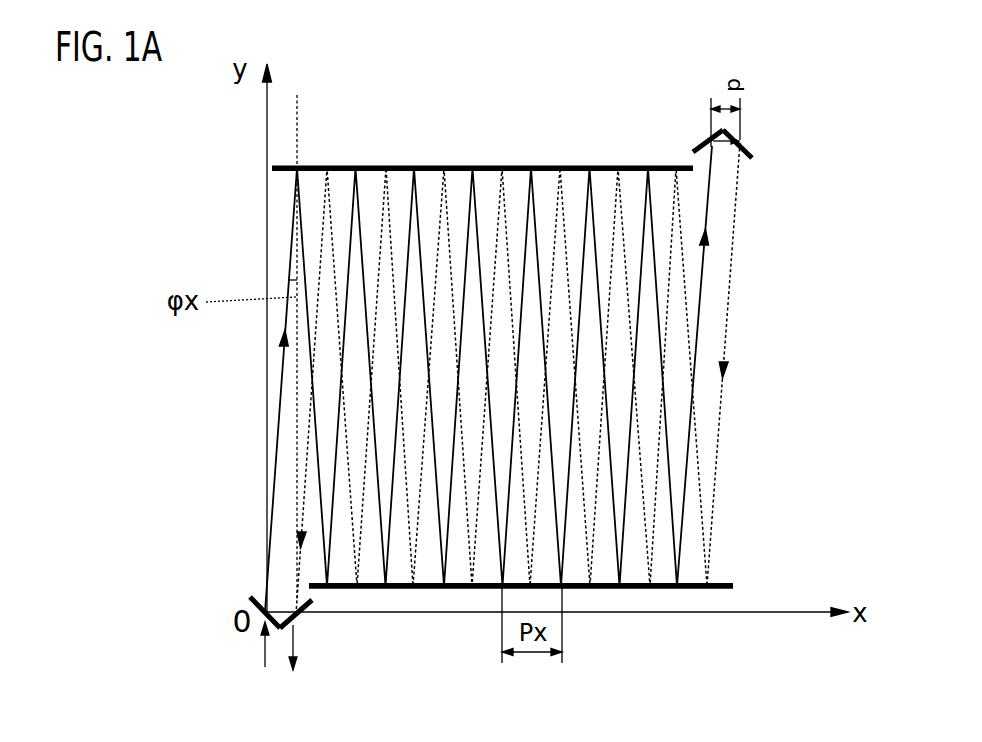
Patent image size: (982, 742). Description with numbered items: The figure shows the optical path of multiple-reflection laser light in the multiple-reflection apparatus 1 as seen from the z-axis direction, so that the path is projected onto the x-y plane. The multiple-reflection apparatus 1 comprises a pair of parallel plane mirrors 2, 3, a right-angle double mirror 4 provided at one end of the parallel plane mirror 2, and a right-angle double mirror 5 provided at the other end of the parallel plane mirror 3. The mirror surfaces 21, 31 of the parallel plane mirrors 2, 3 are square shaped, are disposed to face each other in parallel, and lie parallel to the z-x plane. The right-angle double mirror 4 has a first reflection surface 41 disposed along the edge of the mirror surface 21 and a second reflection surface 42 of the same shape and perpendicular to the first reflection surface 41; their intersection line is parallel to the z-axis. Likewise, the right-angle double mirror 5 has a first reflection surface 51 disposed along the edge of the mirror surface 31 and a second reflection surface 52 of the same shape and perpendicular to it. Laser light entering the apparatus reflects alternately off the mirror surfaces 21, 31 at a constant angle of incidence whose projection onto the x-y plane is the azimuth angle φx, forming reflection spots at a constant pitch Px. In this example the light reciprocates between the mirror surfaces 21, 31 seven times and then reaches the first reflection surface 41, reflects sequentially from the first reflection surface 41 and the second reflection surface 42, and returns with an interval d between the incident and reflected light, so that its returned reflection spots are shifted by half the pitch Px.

The multiple-reflection apparatus 1 is at (188, 204).
The parallel plane mirror 2 is at (575, 165).
The mirror surface 21 is at (450, 170).
The parallel plane mirror 3 is at (662, 590).
The mirror surface 31 is at (452, 583).
The right-angle double mirror 4 is at (763, 144).
The first reflection surface 41 is at (690, 158).
The second reflection surface 42 is at (747, 166).
The right-angle double mirror 5 is at (313, 632).
The first reflection surface 51 is at (312, 596).
The second reflection surface 52 is at (258, 598).